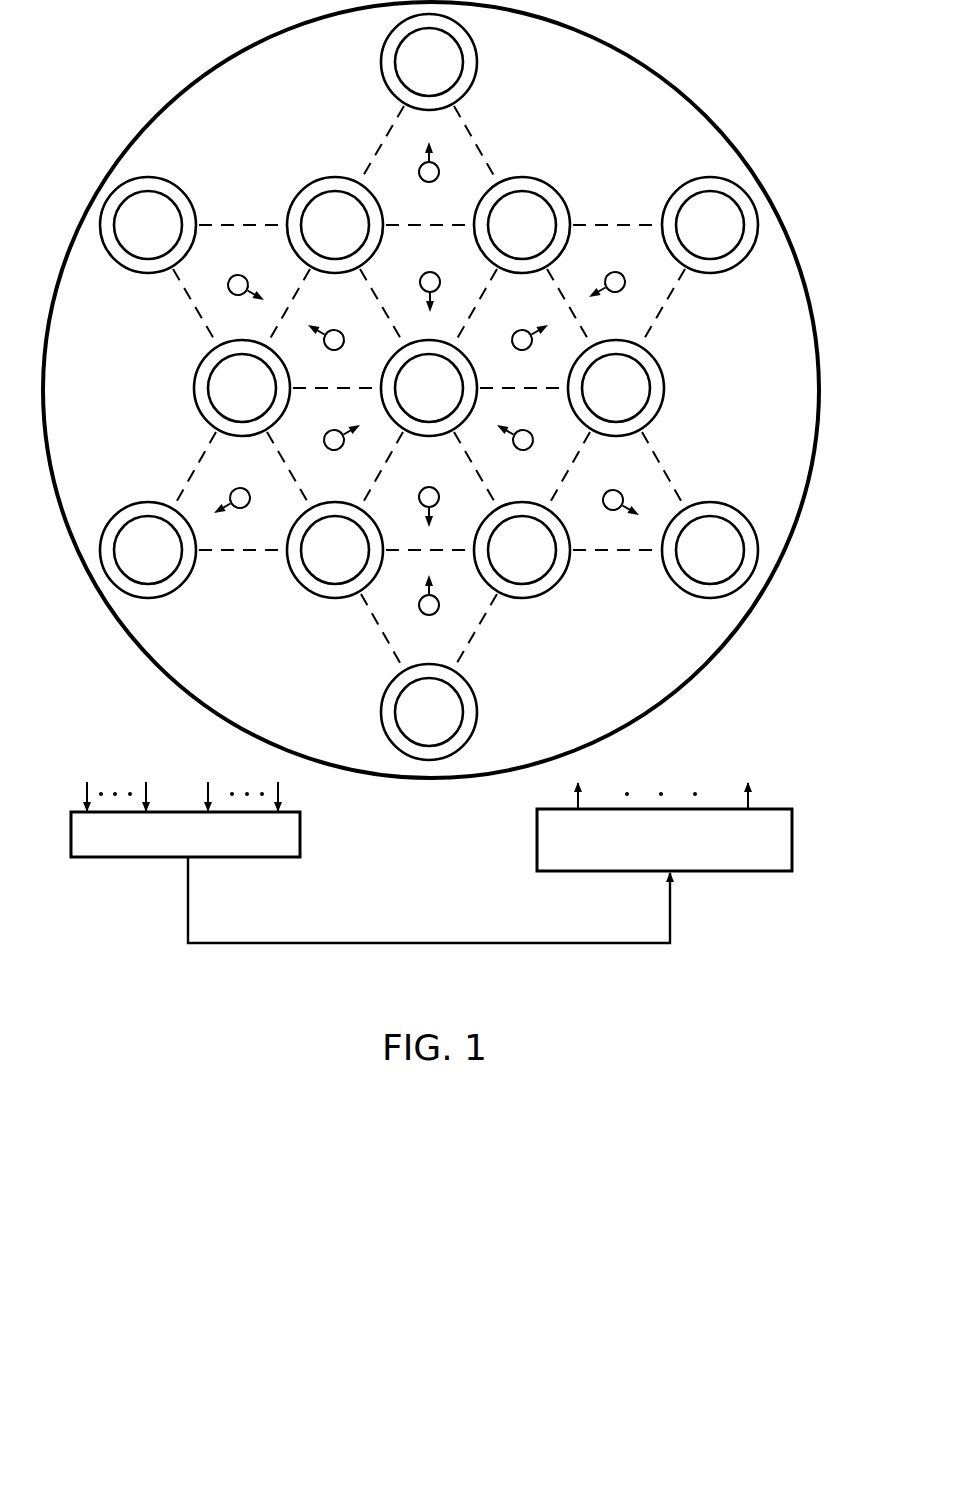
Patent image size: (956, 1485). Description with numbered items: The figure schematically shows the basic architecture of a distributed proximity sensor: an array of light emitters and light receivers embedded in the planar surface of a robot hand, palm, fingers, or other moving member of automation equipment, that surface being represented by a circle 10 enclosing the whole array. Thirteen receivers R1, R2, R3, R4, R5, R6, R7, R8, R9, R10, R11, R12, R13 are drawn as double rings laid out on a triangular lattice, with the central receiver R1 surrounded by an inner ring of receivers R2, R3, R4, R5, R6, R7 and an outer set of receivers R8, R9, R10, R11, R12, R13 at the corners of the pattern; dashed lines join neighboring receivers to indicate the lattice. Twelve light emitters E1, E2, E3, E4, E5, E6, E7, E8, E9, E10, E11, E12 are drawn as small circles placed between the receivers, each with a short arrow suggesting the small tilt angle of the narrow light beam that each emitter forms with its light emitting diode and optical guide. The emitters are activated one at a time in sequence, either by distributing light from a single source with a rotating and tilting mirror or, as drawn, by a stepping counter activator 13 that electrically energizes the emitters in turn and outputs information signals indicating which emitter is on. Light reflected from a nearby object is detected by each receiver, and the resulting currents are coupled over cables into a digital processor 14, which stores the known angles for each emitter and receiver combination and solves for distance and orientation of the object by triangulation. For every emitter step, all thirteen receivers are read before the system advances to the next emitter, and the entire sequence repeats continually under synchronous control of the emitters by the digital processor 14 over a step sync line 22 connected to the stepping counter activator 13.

The circle 10 is at (630, 50).
The stepping counter activator 13 is at (730, 871).
The digital processor 14 is at (130, 857).
The line 22 is at (313, 943).
The receiver R1 is at (429, 375).
The receiver R2 is at (522, 210).
The receiver R3 is at (616, 375).
The receiver R4 is at (522, 566).
The receiver R5 is at (335, 568).
The receiver R6 is at (242, 375).
The receiver R7 is at (335, 211).
The receiver R8 is at (710, 209).
The receiver R9 is at (710, 565).
The receiver R10 is at (444, 714).
The receiver R11 is at (148, 568).
The receiver R12 is at (148, 211).
The receiver R13 is at (449, 62).
The light emitter E1 is at (432, 280).
The light emitter E2 is at (530, 348).
The light emitter E3 is at (515, 448).
The light emitter E4 is at (430, 492).
The light emitter E5 is at (342, 448).
The light emitter E6 is at (325, 348).
The light emitter E7 is at (430, 178).
The light emitter E8 is at (606, 278).
The light emitter E9 is at (621, 494).
The light emitter E10 is at (431, 612).
The light emitter E11 is at (233, 493).
The light emitter E12 is at (246, 280).